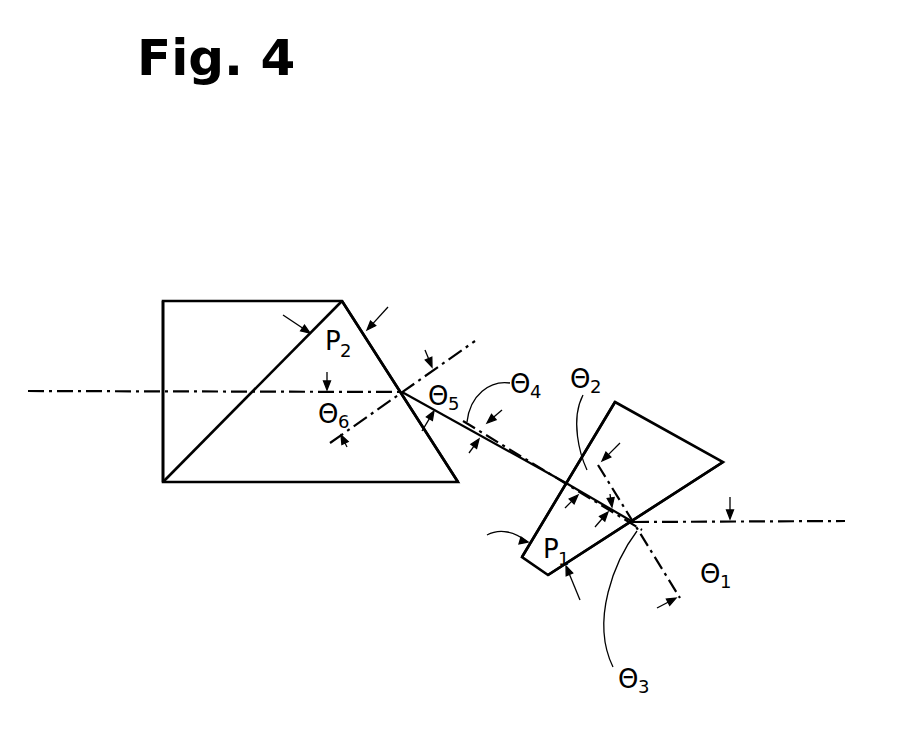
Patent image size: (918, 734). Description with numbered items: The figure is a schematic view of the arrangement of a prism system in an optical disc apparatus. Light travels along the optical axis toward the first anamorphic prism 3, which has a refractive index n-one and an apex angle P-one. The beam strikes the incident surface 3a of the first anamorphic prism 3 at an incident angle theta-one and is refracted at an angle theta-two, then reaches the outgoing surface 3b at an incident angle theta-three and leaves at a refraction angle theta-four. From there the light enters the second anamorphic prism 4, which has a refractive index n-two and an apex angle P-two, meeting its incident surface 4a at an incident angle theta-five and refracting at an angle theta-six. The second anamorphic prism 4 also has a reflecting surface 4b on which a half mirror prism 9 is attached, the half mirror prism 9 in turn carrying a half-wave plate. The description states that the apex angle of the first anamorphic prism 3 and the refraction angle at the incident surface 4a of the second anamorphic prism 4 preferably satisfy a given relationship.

The first anamorphic prism 3 is at (660, 372).
The incident surface of the first anamorphic prism 3a is at (715, 473).
The outgoing surface of the first anamorphic prism 3b is at (533, 507).
The second anamorphic prism 4 is at (277, 470).
The incident surface of the second anamorphic prism 4a is at (380, 360).
The reflecting surface of first prism 4b is at (278, 363).
The half mirror prism 9 is at (168, 429).